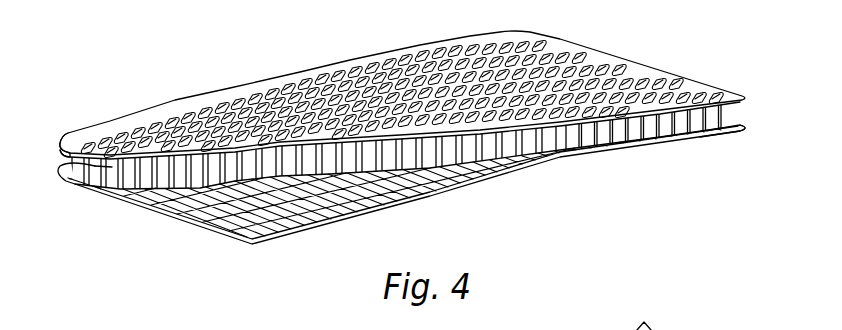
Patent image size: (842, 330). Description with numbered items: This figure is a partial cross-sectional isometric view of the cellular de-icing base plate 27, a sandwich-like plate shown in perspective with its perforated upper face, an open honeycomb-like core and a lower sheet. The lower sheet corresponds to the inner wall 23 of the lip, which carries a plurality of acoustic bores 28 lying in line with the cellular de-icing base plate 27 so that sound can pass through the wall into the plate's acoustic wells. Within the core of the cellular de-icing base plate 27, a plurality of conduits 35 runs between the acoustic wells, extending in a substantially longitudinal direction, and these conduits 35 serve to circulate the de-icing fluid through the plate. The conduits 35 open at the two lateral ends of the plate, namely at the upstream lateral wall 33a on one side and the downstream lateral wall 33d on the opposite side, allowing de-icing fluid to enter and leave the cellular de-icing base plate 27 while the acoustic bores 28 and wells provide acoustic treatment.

The cellular de-icing base plate 27 is at (291, 66).
The inner wall 23 is at (369, 216).
The acoustic bores 28 is at (284, 232).
The conduits 35 is at (200, 188).
The downstream lateral wall 33d is at (117, 119).
The upstream lateral wall 33a is at (565, 158).